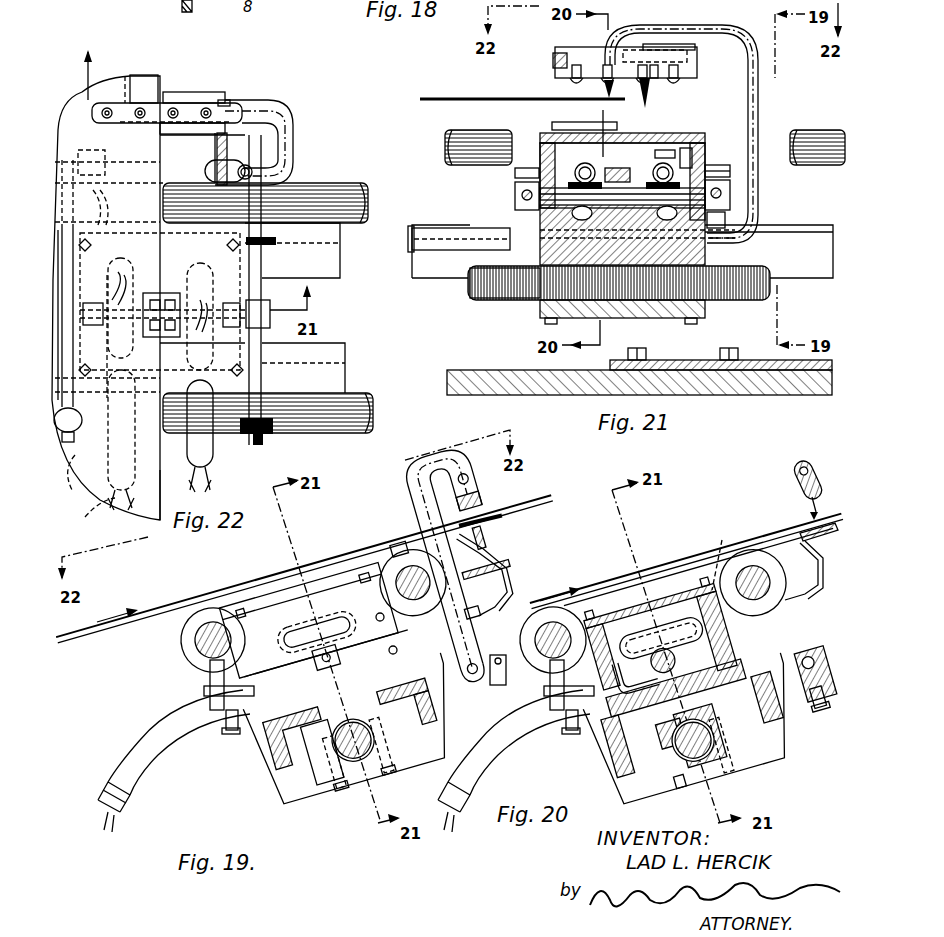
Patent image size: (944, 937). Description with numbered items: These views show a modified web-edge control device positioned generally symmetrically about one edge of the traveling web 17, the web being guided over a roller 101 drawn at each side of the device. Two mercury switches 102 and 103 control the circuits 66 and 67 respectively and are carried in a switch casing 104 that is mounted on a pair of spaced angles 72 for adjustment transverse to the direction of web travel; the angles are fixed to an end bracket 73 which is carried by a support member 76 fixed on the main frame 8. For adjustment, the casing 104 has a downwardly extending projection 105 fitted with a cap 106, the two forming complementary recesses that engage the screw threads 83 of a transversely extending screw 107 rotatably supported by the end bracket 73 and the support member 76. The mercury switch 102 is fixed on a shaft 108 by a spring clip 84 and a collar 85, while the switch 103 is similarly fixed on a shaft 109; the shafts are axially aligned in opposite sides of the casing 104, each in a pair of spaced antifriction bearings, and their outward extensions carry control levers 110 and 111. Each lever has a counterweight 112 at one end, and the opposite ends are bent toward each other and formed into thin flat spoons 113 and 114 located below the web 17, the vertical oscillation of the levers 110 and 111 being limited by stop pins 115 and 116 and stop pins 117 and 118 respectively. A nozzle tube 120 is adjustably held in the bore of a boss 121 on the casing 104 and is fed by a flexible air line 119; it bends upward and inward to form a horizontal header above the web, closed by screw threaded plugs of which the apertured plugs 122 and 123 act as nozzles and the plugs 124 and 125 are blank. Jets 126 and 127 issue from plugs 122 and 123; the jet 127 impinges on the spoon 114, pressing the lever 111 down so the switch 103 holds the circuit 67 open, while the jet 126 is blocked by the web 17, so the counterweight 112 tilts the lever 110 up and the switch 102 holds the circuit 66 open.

In FIG. 21, the main frame 8 is at (766, 388).
In FIG. 22, the traveling web 17 is at (159, 523).
In FIG. 21, the traveling web 17 is at (447, 97).
In FIG. 22, the circuit 66 is at (86, 517).
In FIG. 19, the circuit 66 is at (104, 832).
In FIG. 20, the circuit 66 is at (446, 832).
In FIG. 22, the circuit 67 is at (212, 474).
In FIG. 19, the circuit 67 is at (105, 790).
In FIG. 22, the spaced angles 72 is at (341, 250).
In FIG. 21, the spaced angles 72 is at (805, 268).
In FIG. 19, the spaced angles 72 is at (263, 760).
In FIG. 20, the spaced angles 72 is at (545, 690).
In FIG. 19, the end bracket 73 is at (302, 804).
In FIG. 20, the end bracket 73 is at (786, 750).
In FIG. 21, the support member 76 is at (800, 372).
In FIG. 21, the screw threads 83 is at (530, 300).
In FIG. 19, the screw threads 83 is at (390, 753).
In FIG. 20, the screw threads 83 is at (688, 765).
In FIG. 21, the spring clip 84 is at (578, 165).
In FIG. 20, the spring clip 84 is at (645, 672).
In FIG. 21, the collar 85 is at (575, 222).
In FIG. 20, the collar 85 is at (676, 658).
In FIG. 22, the roller 101 is at (356, 186).
In FIG. 21, the roller 101 is at (455, 132).
In FIG. 19, the roller 101 is at (195, 638).
In FIG. 20, the roller 101 is at (548, 672).
In FIG. 22, the mercury switch 102 is at (125, 262).
In FIG. 21, the mercury switch 102 is at (545, 150).
In FIG. 19, the mercury switch 102 is at (317, 632).
In FIG. 20, the mercury switch 102 is at (670, 622).
In FIG. 22, the mercury switch 103 is at (264, 302).
In FIG. 21, the mercury switch 103 is at (687, 150).
In FIG. 19, the mercury switch 103 is at (365, 582).
In FIG. 22, the switch casing 104 is at (228, 350).
In FIG. 21, the switch casing 104 is at (706, 153).
In FIG. 19, the switch casing 104 is at (318, 600).
In FIG. 20, the switch casing 104 is at (613, 615).
In FIG. 21, the downwardly extending projection 105 is at (734, 240).
In FIG. 19, the downwardly extending projection 105 is at (320, 718).
In FIG. 20, the downwardly extending projection 105 is at (660, 765).
In FIG. 21, the cap 106 is at (660, 319).
In FIG. 19, the cap 106 is at (377, 770).
In FIG. 20, the cap 106 is at (760, 762).
In FIG. 21, the transversely extending screw 107 is at (470, 286).
In FIG. 19, the transversely extending screw 107 is at (353, 782).
In FIG. 20, the transversely extending screw 107 is at (730, 780).
In FIG. 21, the shaft 108 is at (540, 212).
In FIG. 20, the shaft 108 is at (662, 735).
In FIG. 21, the shaft 109 is at (638, 225).
In FIG. 19, the shaft 109 is at (392, 655).
In FIG. 22, the control lever 110 is at (78, 152).
In FIG. 21, the control lever 110 is at (515, 195).
In FIG. 19, the control lever 110 is at (493, 586).
In FIG. 20, the control lever 110 is at (810, 592).
In FIG. 22, the control lever 111 is at (226, 140).
In FIG. 21, the control lever 111 is at (731, 196).
In FIG. 19, the control lever 111 is at (488, 612).
In FIG. 22, the counterweight 112 is at (74, 433).
In FIG. 19, the counterweight 112 is at (204, 690).
In FIG. 20, the counterweight 112 is at (569, 740).
In FIG. 22, the spoon 113 is at (125, 76).
In FIG. 21, the spoon 113 is at (585, 122).
In FIG. 19, the spoon 113 is at (503, 521).
In FIG. 20, the spoon 113 is at (815, 540).
In FIG. 22, the spoon 114 is at (200, 92).
In FIG. 21, the spoon 114 is at (665, 150).
In FIG. 19, the spoon 114 is at (508, 570).
In FIG. 22, the stop pin 115 is at (118, 196).
In FIG. 21, the stop pin 115 is at (515, 173).
In FIG. 20, the stop pin 115 is at (714, 558).
In FIG. 20, the stop pin 116 is at (728, 633).
In FIG. 22, the stop pin 117 is at (277, 241).
In FIG. 21, the stop pin 117 is at (731, 172).
In FIG. 19, the stop pin 117 is at (398, 551).
In FIG. 19, the stop pin 118 is at (408, 695).
In FIG. 21, the flexible air line 119 is at (440, 228).
In FIG. 22, the nozzle tube 120 is at (294, 158).
In FIG. 21, the nozzle tube 120 is at (759, 93).
In FIG. 19, the nozzle tube 120 is at (408, 481).
In FIG. 20, the nozzle tube 120 is at (820, 453).
In FIG. 22, the boss 121 is at (250, 170).
In FIG. 19, the boss 121 is at (498, 655).
In FIG. 20, the boss 121 is at (820, 652).
In FIG. 22, the apertured plug 122 is at (144, 106).
In FIG. 21, the apertured plug 122 is at (598, 65).
In FIG. 20, the apertured plug 122 is at (805, 497).
In FIG. 22, the apertured plug 123 is at (175, 107).
In FIG. 21, the apertured plug 123 is at (645, 78).
In FIG. 22, the blank plug 124 is at (107, 107).
In FIG. 21, the blank plug 124 is at (558, 62).
In FIG. 22, the blank plug 125 is at (224, 100).
In FIG. 21, the blank plug 125 is at (690, 78).
In FIG. 19, the blank plug 125 is at (486, 499).
In FIG. 21, the jet 126 is at (604, 90).
In FIG. 20, the jet 126 is at (812, 516).
In FIG. 21, the jet 127 is at (652, 108).
In FIG. 19, the jet 127 is at (492, 540).